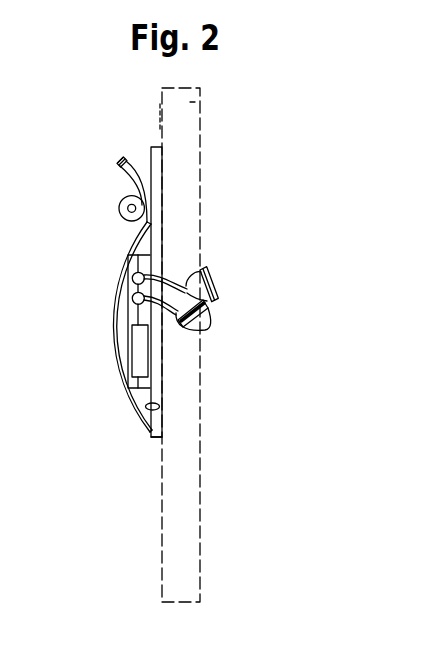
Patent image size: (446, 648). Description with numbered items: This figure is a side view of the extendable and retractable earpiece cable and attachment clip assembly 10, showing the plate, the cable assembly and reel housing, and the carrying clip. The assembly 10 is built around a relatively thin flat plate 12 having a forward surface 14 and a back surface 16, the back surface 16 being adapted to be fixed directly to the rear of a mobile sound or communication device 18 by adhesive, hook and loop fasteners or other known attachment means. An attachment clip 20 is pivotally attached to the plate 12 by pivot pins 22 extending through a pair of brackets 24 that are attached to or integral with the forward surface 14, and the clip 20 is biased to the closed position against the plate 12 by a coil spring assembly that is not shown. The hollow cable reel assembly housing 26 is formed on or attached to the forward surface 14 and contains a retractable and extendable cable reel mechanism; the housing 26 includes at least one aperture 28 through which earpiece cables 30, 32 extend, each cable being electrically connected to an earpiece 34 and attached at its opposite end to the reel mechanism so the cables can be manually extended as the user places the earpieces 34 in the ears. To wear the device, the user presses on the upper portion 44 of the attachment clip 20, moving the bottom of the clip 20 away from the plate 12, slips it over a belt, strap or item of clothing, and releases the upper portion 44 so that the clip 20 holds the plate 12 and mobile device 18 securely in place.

The extendable and retractable earpiece cable and attachment clip assembly 10 is at (138, 125).
The plate 12 is at (162, 157).
The forward surface 14 is at (160, 406).
The back surface 16 is at (163, 425).
The mobile sound or communication device 18 is at (209, 98).
The attachment clip 20 is at (120, 397).
The pivot pins 22 is at (119, 209).
The brackets 24 is at (127, 193).
The cable reel assembly housing 26 is at (146, 253).
The aperture 28 is at (132, 276).
The earpiece cable 30 is at (176, 284).
The earpiece cable 32 is at (167, 337).
The earpiece 34 is at (210, 265).
The upper portion of attachment clip 44 is at (118, 166).